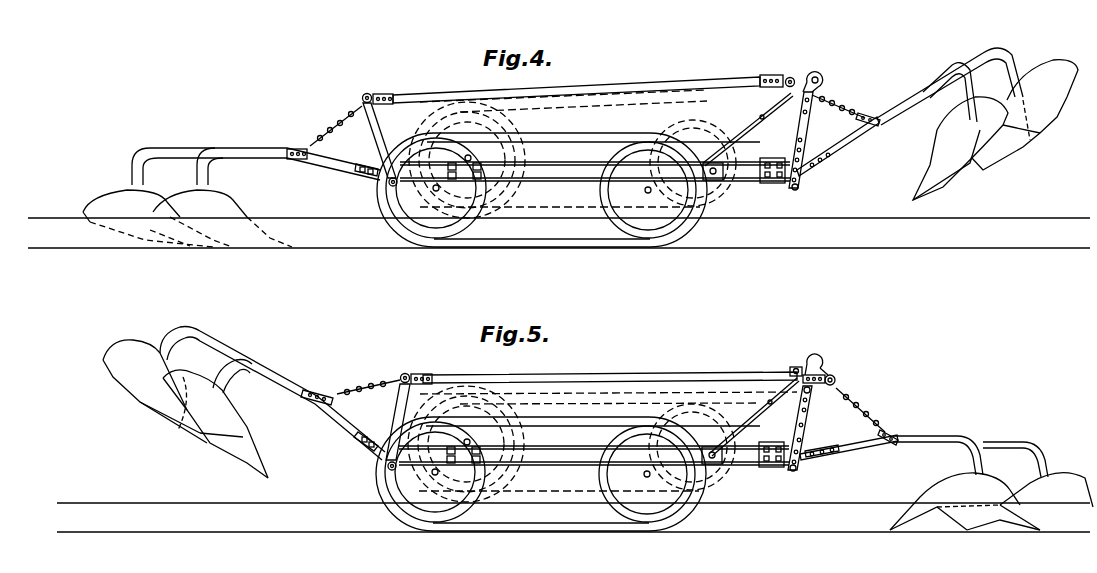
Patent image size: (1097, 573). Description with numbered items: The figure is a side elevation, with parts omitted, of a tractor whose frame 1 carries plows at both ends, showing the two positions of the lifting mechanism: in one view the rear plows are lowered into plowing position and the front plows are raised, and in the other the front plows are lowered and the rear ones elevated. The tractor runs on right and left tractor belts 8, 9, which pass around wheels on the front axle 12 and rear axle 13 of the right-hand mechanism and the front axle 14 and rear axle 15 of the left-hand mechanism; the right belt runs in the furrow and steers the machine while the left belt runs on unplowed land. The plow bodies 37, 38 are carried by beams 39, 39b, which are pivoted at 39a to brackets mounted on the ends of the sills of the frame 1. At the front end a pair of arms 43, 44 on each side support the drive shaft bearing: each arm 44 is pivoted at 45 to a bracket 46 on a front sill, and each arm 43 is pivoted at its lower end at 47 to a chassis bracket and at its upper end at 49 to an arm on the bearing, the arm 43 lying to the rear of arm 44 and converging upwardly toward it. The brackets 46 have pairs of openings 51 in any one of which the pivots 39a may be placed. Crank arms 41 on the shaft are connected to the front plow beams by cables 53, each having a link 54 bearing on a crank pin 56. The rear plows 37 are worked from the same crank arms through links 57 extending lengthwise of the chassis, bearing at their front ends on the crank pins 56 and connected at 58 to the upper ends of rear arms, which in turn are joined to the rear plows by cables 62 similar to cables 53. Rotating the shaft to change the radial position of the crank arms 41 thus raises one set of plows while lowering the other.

In FIG. 4, the frame 1 is at (540, 177).
In FIG. 5, the frame 1 is at (541, 474).
In FIG. 4, the right tractor belt 8 is at (558, 139).
In FIG. 5, the right tractor belt 8 is at (537, 423).
In FIG. 4, the left tractor belt 9 is at (641, 106).
In FIG. 5, the left tractor belt 9 is at (595, 391).
In FIG. 4, the front axle 12 is at (645, 189).
In FIG. 5, the front axle 12 is at (643, 473).
In FIG. 4, the rear axle 13 is at (390, 190).
In FIG. 5, the rear axle 13 is at (388, 468).
In FIG. 4, the front axle 14 is at (688, 157).
In FIG. 5, the front axle 14 is at (687, 432).
In FIG. 4, the rear axle 15 is at (541, 160).
In FIG. 5, the rear axle 15 is at (594, 447).
In FIG. 4, the plow body 37 is at (127, 207).
In FIG. 5, the plow body 37 is at (205, 413).
In FIG. 4, the plow body 38 is at (980, 130).
In FIG. 5, the plow body 38 is at (1043, 487).
In FIG. 4, the plow beam 39 is at (237, 157).
In FIG. 5, the plow beam 39 is at (264, 364).
In FIG. 4, the pivot 39a is at (822, 160).
In FIG. 5, the pivot 39a is at (808, 466).
In FIG. 4, the plow beam 39b is at (950, 72).
In FIG. 5, the plow beam 39b is at (983, 433).
In FIG. 4, the crank arm 41 is at (815, 71).
In FIG. 5, the crank arm 41 is at (820, 362).
In FIG. 4, the arm 43 is at (768, 125).
In FIG. 5, the arm 43 is at (757, 409).
In FIG. 4, the arm 44 is at (810, 118).
In FIG. 5, the arm 44 is at (807, 427).
In FIG. 5, the pivot 45 is at (815, 458).
In FIG. 4, the bracket 46 is at (806, 176).
In FIG. 5, the bracket 46 is at (786, 467).
In FIG. 4, the pivot 47 is at (718, 180).
In FIG. 5, the pivot 47 is at (722, 463).
In FIG. 5, the pivot 49 is at (796, 367).
In FIG. 4, the openings 51 is at (796, 190).
In FIG. 5, the openings 51 is at (794, 472).
In FIG. 4, the cable 53 is at (853, 106).
In FIG. 5, the cable 53 is at (848, 407).
In FIG. 4, the link 54 is at (822, 80).
In FIG. 5, the link 54 is at (834, 380).
In FIG. 4, the crank pin 56 is at (788, 77).
In FIG. 5, the crank pin 56 is at (809, 394).
In FIG. 4, the link 57 is at (446, 93).
In FIG. 5, the link 57 is at (490, 376).
In FIG. 4, the connection 58 is at (365, 94).
In FIG. 5, the connection 58 is at (402, 373).
In FIG. 4, the cable 62 is at (332, 125).
In FIG. 5, the cable 62 is at (352, 387).